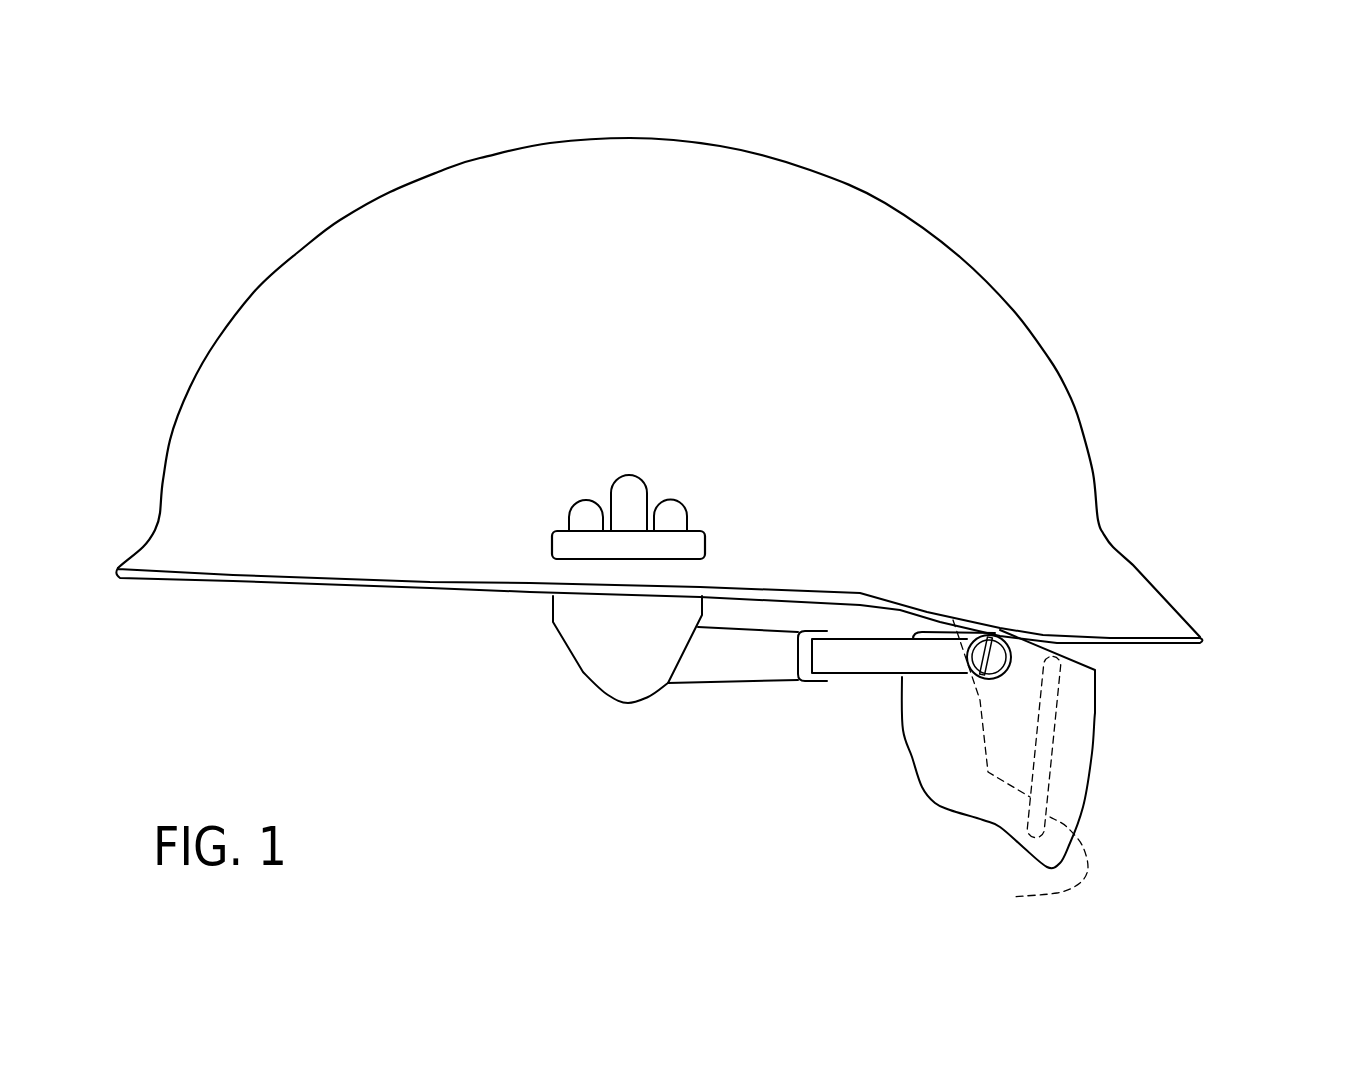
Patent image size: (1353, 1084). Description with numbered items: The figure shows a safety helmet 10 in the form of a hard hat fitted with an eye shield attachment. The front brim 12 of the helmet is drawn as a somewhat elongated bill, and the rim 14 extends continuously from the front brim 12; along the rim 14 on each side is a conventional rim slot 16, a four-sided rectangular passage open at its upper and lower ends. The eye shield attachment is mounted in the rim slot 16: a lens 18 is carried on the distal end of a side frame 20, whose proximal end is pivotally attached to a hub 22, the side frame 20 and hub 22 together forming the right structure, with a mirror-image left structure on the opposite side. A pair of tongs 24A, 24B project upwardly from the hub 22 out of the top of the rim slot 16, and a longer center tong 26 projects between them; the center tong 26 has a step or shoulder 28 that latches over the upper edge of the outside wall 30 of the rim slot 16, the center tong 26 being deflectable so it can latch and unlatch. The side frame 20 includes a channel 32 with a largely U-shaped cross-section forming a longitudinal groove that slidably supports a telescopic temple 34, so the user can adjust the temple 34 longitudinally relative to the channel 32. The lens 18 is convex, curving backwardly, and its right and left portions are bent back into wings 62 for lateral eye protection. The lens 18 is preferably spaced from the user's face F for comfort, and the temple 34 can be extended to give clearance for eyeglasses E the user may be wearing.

The safety helmet 10 is at (709, 401).
The front brim 12 is at (1133, 565).
The rim 14 is at (295, 583).
The rim slot 16 is at (632, 492).
The lens 18 is at (1064, 780).
The side frame 20 is at (820, 683).
The hub 22 is at (580, 670).
The tong 24A is at (578, 500).
The tong 24B is at (670, 497).
The center tong 26 is at (628, 475).
The step or shoulder 28 is at (625, 533).
The outside wall 30 is at (705, 545).
The channel 32 is at (707, 680).
The telescopic temple 34 is at (872, 675).
The wings 62 is at (957, 813).
The eyeglasses E is at (1057, 762).
The face F is at (980, 695).